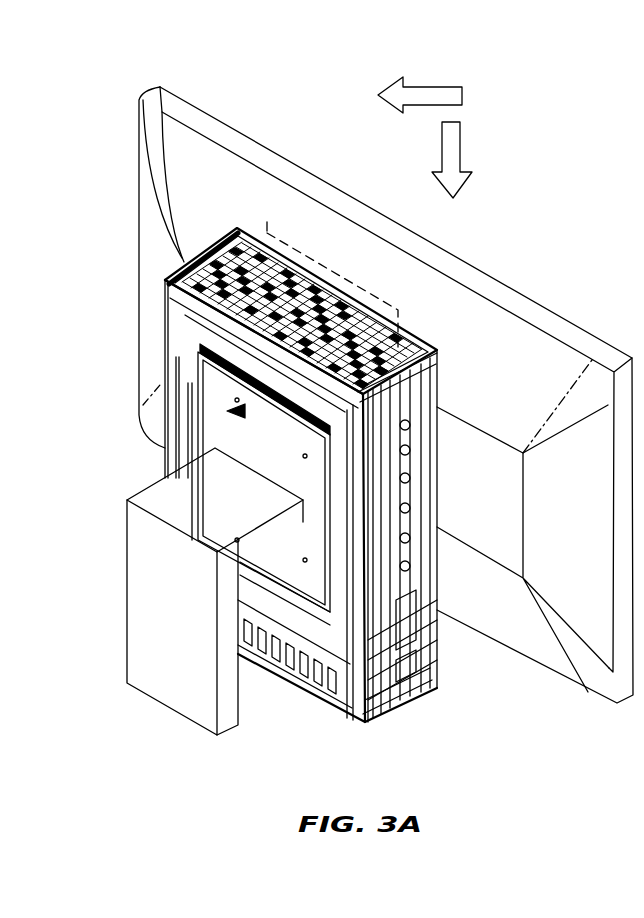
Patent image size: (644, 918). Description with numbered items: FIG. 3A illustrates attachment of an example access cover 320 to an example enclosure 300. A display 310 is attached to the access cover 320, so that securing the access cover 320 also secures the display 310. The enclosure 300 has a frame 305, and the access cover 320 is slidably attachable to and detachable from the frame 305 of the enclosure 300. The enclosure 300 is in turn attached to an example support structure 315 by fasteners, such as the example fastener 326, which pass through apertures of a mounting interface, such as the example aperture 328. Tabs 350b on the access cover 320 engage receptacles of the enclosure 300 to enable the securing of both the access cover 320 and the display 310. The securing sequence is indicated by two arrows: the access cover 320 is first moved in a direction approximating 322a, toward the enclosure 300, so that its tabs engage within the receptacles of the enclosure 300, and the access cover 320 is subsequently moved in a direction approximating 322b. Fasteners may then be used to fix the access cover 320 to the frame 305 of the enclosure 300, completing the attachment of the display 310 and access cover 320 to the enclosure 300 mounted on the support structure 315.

The enclosure 300 is at (363, 405).
The frame 305 is at (317, 445).
The display 310 is at (492, 293).
The support structure 315 is at (238, 508).
The access cover 320 is at (438, 345).
The direction 322a is at (440, 87).
The direction 322b is at (460, 135).
The fastener 326 is at (222, 410).
The aperture 328 is at (245, 411).
The tabs 350b is at (266, 240).